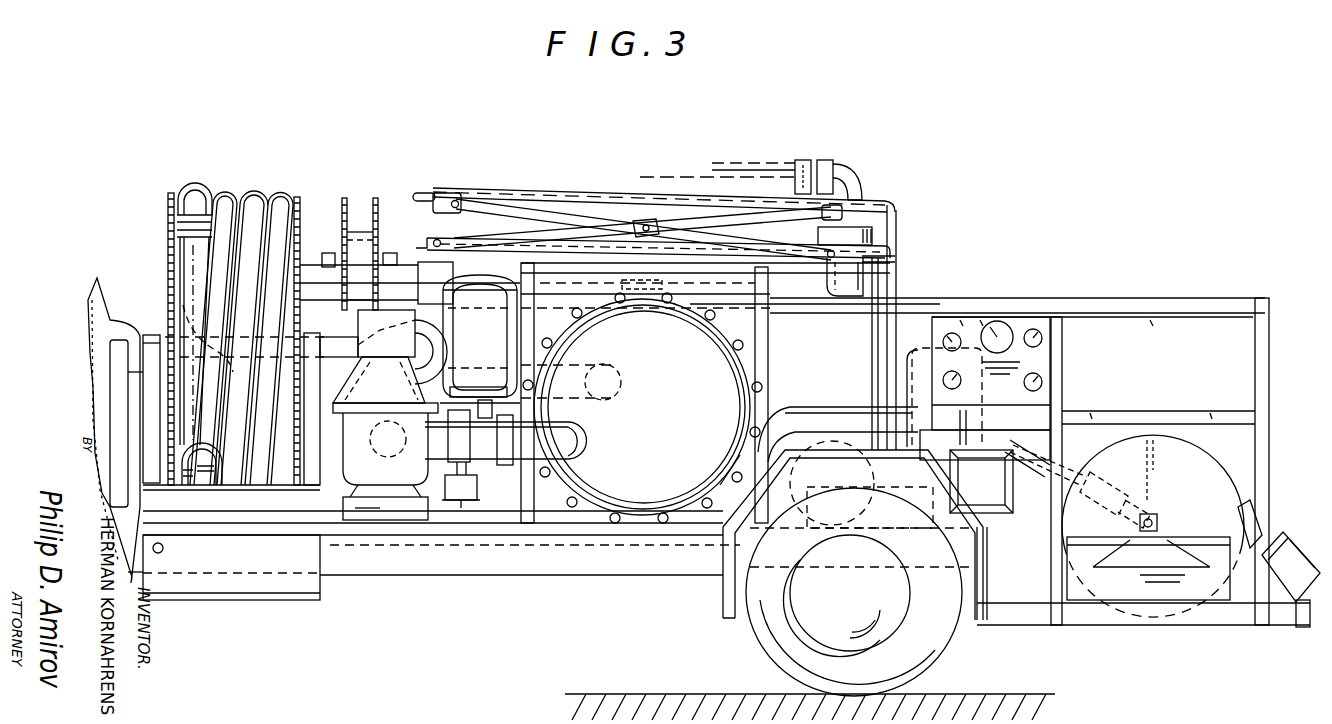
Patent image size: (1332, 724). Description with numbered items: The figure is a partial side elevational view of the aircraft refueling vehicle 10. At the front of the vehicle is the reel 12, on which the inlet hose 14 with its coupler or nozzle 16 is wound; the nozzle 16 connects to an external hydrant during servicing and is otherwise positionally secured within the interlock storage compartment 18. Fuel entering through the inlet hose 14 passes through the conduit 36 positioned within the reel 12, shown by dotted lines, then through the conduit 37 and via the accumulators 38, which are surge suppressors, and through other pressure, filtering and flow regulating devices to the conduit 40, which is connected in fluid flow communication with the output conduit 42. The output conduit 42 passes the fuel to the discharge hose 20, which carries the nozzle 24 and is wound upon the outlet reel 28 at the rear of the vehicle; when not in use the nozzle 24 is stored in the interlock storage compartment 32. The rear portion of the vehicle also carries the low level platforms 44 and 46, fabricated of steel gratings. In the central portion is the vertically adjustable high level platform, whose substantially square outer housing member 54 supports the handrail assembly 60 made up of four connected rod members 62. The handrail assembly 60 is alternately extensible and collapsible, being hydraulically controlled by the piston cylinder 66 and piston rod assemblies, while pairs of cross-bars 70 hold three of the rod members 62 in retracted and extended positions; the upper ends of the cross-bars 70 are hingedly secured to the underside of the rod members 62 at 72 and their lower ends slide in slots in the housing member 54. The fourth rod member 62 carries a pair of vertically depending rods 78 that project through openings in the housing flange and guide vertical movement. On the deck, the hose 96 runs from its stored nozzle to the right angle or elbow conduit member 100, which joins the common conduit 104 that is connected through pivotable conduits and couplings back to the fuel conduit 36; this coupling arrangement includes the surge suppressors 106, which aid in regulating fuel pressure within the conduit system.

The aircraft refueling vehicle 10 is at (77, 264).
The reel 12 is at (172, 208).
The inlet hose 14 is at (258, 198).
The coupler or nozzle 16 is at (184, 472).
The interlock storage compartment 18 is at (206, 477).
The outlet or discharge hose 20 is at (1243, 510).
The nozzle 24 is at (1265, 525).
The outlet reel 28 is at (1167, 437).
The interlock storage compartment 32 is at (1300, 555).
The conduit 36 is at (238, 334).
The conduit 37 is at (342, 345).
The accumulators 38 is at (923, 352).
The conduit 40 is at (785, 423).
The output conduit 42 is at (1034, 463).
The low level platform 44 is at (1213, 390).
The low level platform 46 is at (1003, 292).
The outer housing member 54 is at (900, 258).
The handrail assembly 60 is at (416, 181).
The rod members 62 is at (410, 195).
The piston cylinder 66 is at (493, 236).
The cross-bars 70 is at (555, 210).
The hinge connection 72 is at (458, 200).
The vertically depending rods 78 is at (900, 223).
The hose 96 is at (786, 168).
The right angle or elbow conduit member 100 is at (853, 173).
The common conduit 104 is at (836, 297).
The surge suppressors 106 is at (484, 347).